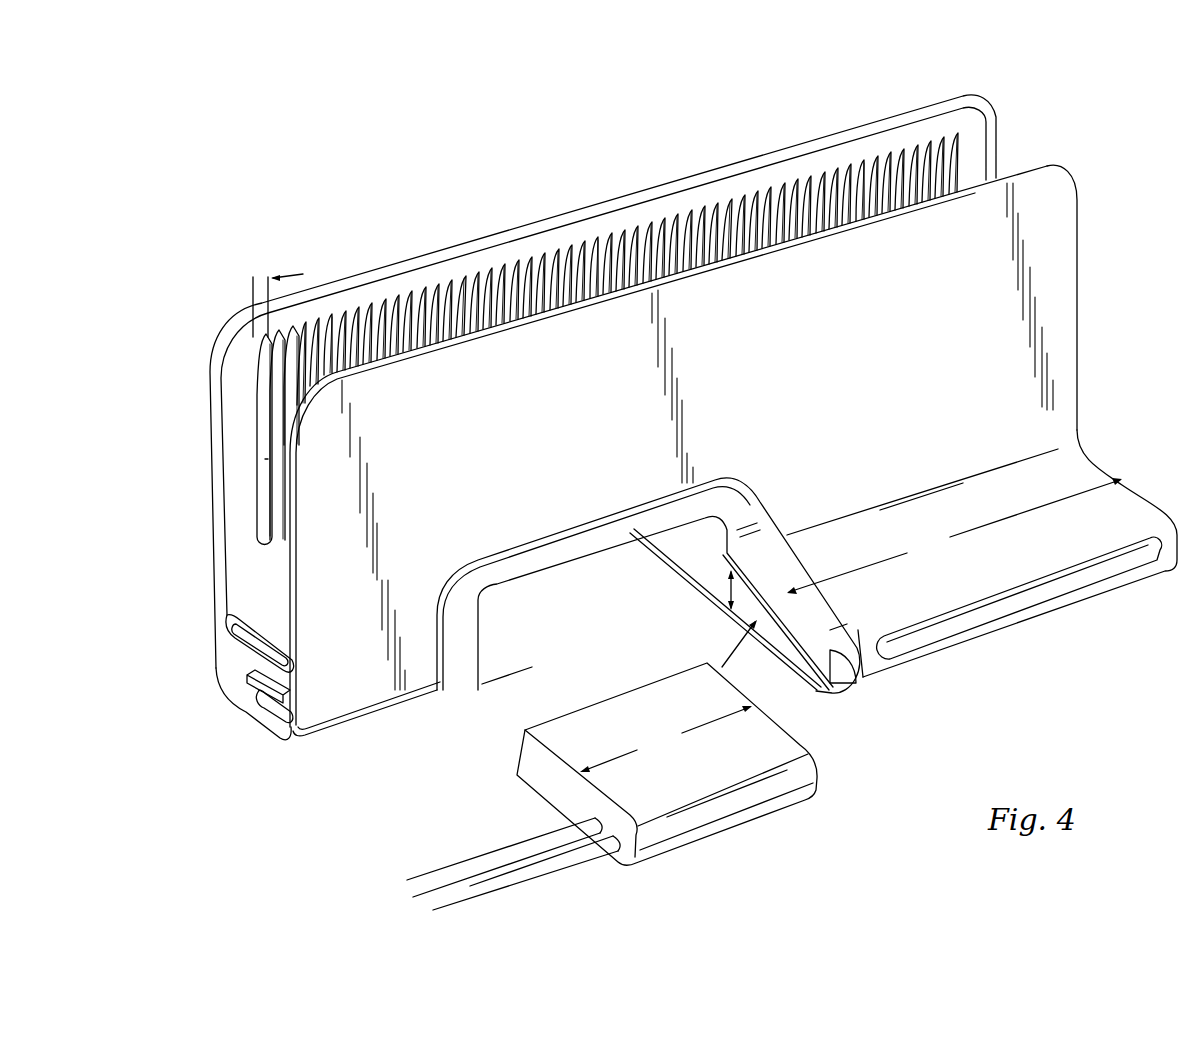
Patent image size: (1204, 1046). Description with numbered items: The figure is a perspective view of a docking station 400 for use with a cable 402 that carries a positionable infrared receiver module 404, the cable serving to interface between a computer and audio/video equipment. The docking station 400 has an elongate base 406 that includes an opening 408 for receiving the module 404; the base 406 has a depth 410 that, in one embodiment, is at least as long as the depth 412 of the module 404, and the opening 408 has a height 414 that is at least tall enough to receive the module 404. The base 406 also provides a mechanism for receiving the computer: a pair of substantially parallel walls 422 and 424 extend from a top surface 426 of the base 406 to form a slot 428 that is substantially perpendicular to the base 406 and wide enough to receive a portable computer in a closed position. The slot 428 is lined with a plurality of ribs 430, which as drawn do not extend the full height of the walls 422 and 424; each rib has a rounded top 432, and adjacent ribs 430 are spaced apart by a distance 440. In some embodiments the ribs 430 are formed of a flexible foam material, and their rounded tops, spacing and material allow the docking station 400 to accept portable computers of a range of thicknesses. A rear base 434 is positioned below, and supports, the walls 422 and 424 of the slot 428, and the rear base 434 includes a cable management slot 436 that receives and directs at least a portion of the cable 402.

The docking station 400 is at (552, 176).
The cable 402 is at (712, 882).
The infrared receiver module 404 is at (800, 797).
The elongate base 406 is at (1020, 562).
The opening 408 is at (700, 562).
The depth 410 is at (954, 536).
The depth of module 412 is at (666, 739).
The height 414 is at (722, 590).
The wall 422 is at (847, 131).
The wall 424 is at (1003, 178).
The top surface 426 is at (1068, 455).
The slot 428 is at (1035, 152).
The ribs 430 is at (453, 283).
The rounded top 432 is at (258, 358).
The rear base 434 is at (330, 705).
The cable management slot 436 is at (256, 693).
The distance 440 is at (248, 289).